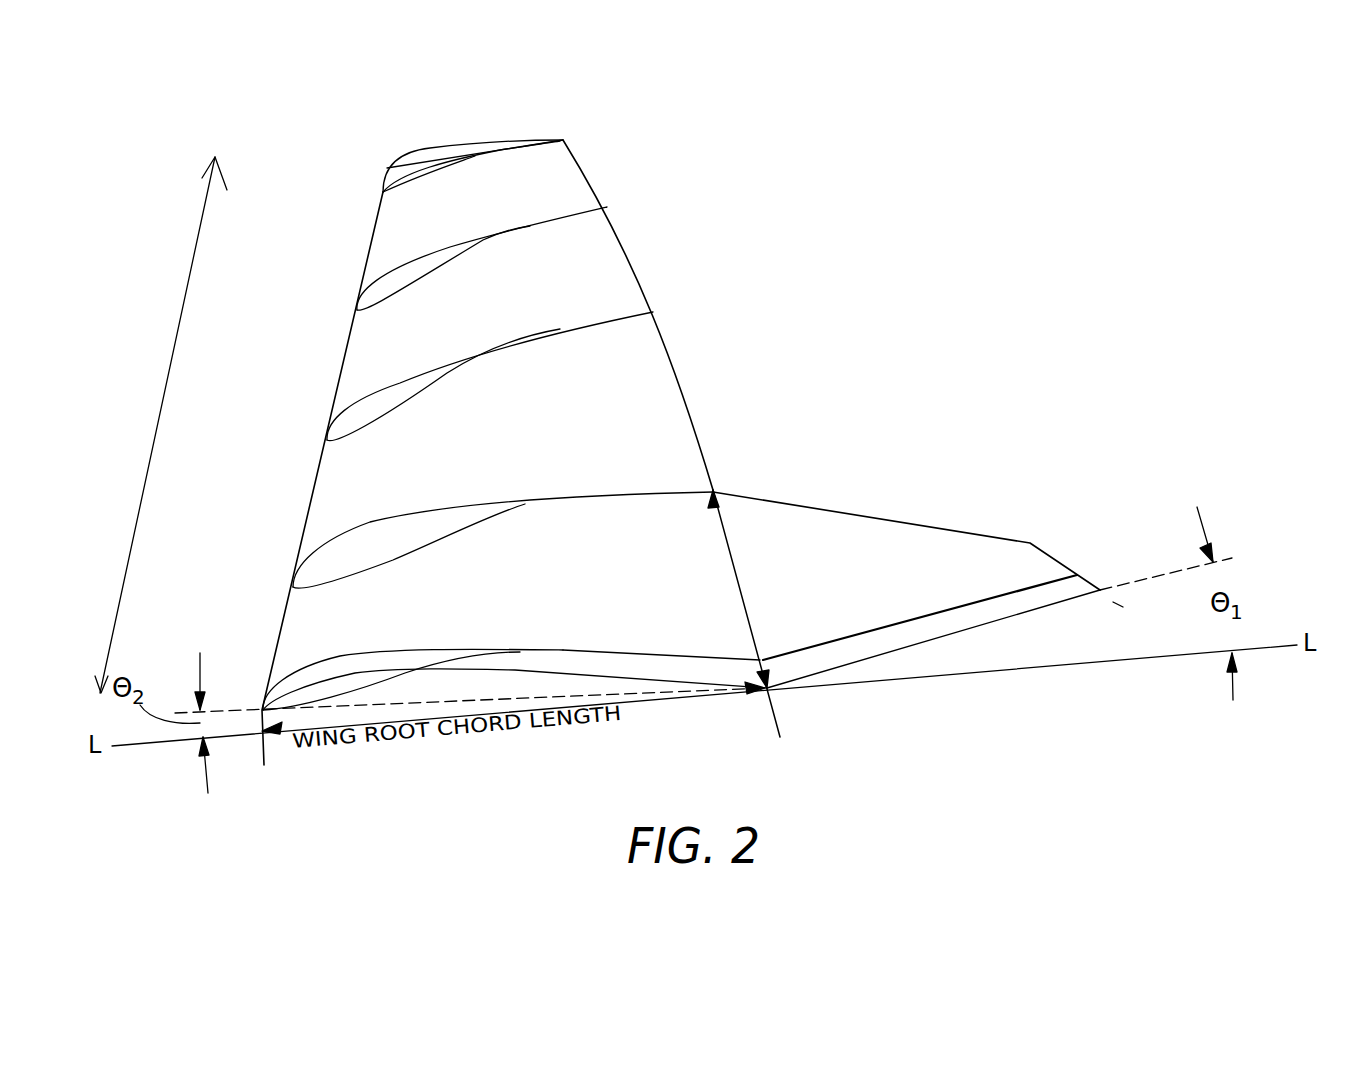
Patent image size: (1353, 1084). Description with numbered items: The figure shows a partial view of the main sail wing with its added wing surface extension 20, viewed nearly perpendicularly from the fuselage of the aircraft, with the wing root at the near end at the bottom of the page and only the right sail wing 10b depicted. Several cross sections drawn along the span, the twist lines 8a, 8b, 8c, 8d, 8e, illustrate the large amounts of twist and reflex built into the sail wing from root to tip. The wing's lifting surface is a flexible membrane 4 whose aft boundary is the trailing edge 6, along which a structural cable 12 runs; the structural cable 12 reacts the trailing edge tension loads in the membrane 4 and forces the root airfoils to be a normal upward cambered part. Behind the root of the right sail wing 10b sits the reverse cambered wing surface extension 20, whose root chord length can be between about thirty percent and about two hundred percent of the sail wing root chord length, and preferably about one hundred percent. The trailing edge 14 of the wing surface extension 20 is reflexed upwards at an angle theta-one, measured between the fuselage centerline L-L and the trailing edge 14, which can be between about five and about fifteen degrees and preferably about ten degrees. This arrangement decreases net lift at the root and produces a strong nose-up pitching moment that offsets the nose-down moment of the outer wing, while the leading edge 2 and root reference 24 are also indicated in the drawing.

The wing leading edge 2 is at (337, 390).
The membrane 4 is at (577, 287).
The trailing edge 6 is at (690, 408).
The twist line 8a is at (643, 657).
The twist line 8b is at (672, 487).
The twist line 8c is at (627, 318).
The twist line 8d is at (577, 213).
The twist line 8e is at (507, 148).
The right sail wing 10b is at (343, 240).
The structural cable 12 is at (748, 570).
The trailing edge of wing surface extension 14 is at (1067, 568).
The wing surface extension 20 is at (910, 562).
The wing root chord line 24 is at (282, 617).